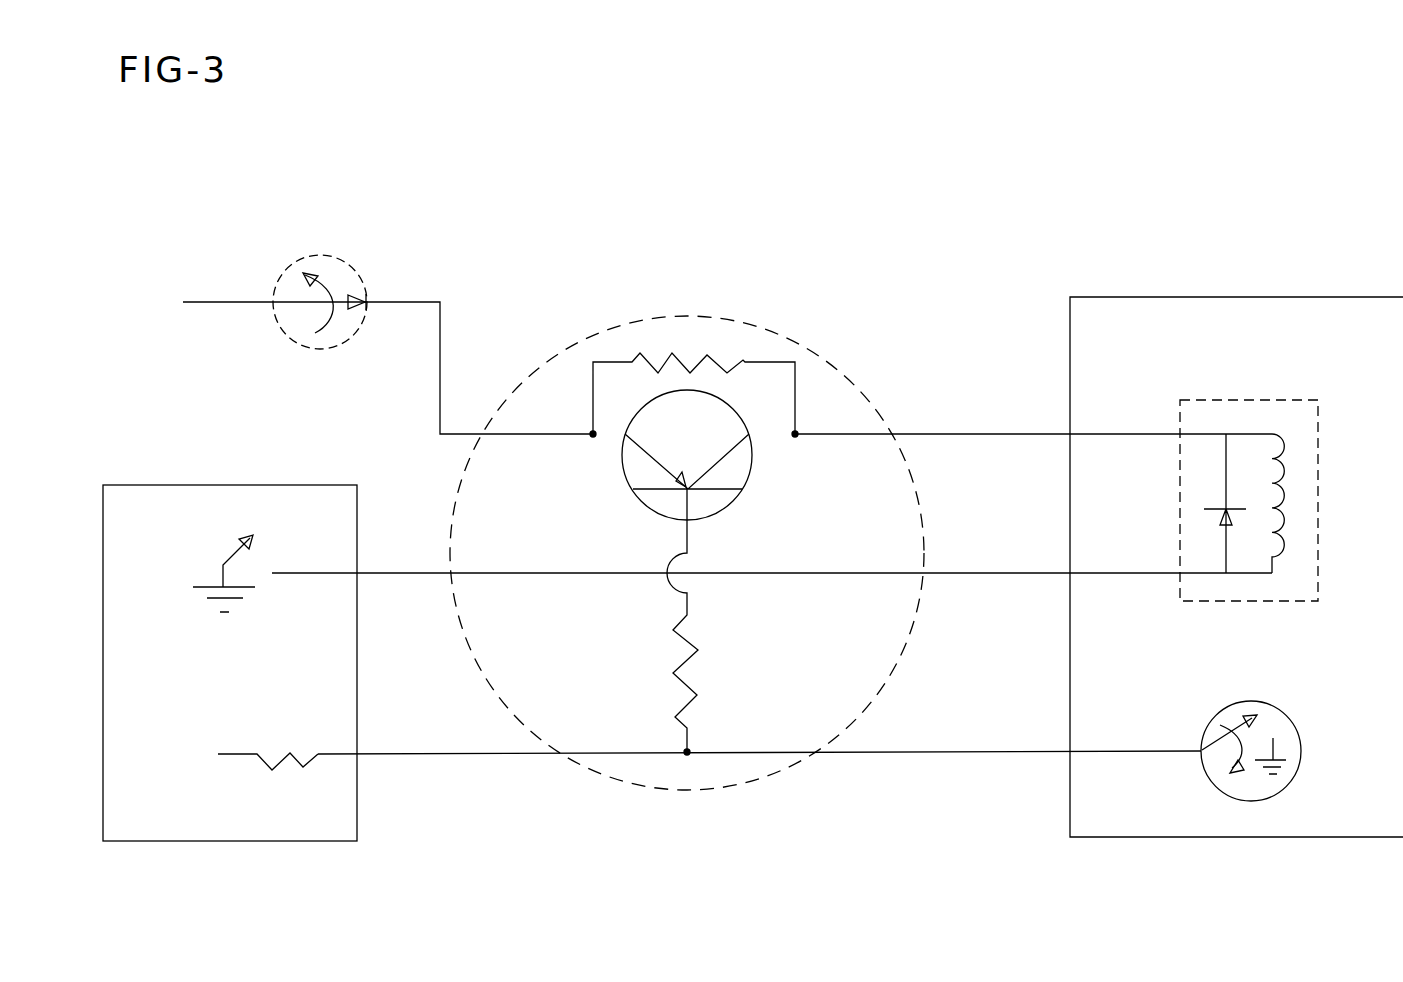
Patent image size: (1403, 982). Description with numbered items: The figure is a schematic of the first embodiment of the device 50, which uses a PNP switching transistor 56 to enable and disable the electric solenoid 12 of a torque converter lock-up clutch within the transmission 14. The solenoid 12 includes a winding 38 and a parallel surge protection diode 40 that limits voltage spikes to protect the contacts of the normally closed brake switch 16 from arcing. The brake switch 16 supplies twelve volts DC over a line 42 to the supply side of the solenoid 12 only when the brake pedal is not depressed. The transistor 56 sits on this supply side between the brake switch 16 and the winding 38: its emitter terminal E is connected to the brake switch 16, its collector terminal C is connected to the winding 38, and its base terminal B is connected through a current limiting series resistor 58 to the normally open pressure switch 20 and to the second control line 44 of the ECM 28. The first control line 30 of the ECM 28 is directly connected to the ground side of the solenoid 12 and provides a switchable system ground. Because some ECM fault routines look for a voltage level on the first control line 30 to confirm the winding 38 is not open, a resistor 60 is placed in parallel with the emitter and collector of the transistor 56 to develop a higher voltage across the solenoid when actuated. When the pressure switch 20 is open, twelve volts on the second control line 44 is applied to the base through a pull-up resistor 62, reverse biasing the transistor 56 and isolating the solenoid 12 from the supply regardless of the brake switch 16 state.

The electric solenoid 12 is at (1262, 398).
The transmission 14 is at (1133, 296).
The brake switch 16 is at (350, 260).
The pressure switch 20 is at (1278, 705).
The ECM 28 is at (357, 518).
The first control line 30 is at (378, 572).
The winding 38 is at (1287, 498).
The surge protection diode 40 is at (1198, 505).
The line 42 is at (445, 363).
The second control line 44 is at (393, 752).
The device 50 is at (765, 777).
The PNP switching transistor 56 is at (630, 500).
The current limiting series resistor 58 is at (688, 665).
The resistor 60 is at (682, 362).
The pull-up resistor 62 is at (303, 765).